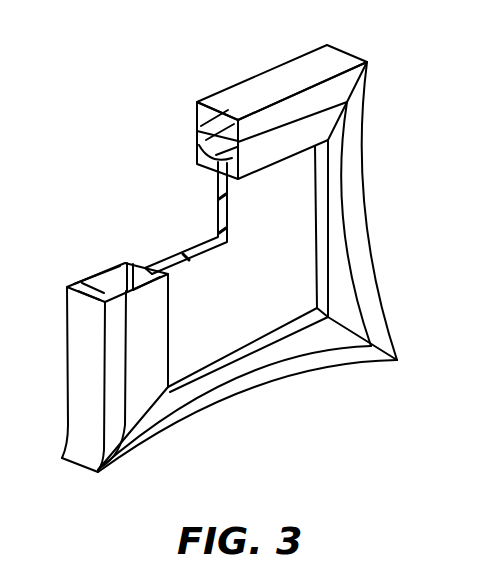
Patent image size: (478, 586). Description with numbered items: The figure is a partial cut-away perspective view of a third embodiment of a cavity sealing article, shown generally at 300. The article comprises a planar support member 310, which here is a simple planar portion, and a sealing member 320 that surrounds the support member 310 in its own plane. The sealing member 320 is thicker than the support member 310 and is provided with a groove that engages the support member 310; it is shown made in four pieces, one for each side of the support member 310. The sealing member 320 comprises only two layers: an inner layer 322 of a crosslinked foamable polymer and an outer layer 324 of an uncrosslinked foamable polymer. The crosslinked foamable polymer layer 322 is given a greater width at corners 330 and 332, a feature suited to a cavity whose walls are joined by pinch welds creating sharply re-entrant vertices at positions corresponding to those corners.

The cavity sealing article 300 is at (127, 127).
The planar support member 310 is at (247, 218).
The sealing member 320 is at (233, 58).
The inner layer 322 is at (341, 198).
The outer layer 324 is at (353, 137).
The corner 330 is at (370, 338).
The corner 332 is at (105, 460).